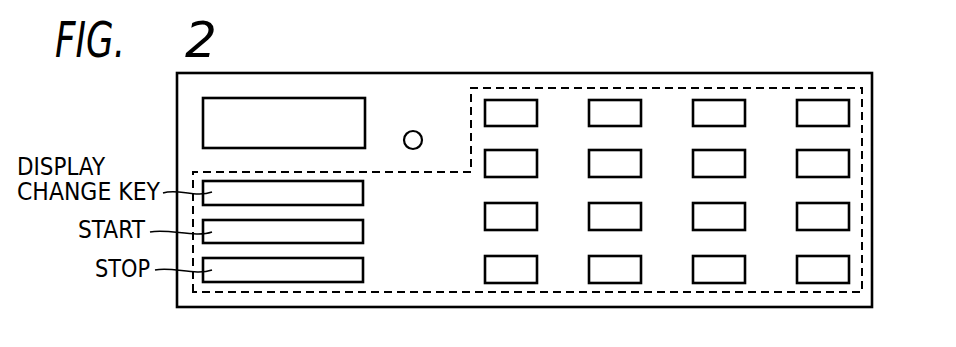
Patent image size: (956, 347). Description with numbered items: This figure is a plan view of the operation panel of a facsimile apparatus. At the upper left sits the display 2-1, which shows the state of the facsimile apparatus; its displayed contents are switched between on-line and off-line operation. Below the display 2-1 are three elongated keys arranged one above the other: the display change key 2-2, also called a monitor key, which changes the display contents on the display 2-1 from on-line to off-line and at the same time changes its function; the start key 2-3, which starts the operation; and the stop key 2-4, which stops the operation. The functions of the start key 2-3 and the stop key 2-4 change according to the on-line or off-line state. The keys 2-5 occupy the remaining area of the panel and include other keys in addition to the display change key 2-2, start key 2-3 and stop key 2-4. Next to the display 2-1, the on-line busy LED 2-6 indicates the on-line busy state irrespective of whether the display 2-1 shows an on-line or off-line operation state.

The display 2-1 is at (354, 90).
The display change key 2-2 is at (363, 192).
The start key 2-3 is at (363, 230).
The stop key 2-4 is at (363, 268).
The keys 2-5 is at (829, 81).
The on-line busy LED 2-6 is at (462, 80).